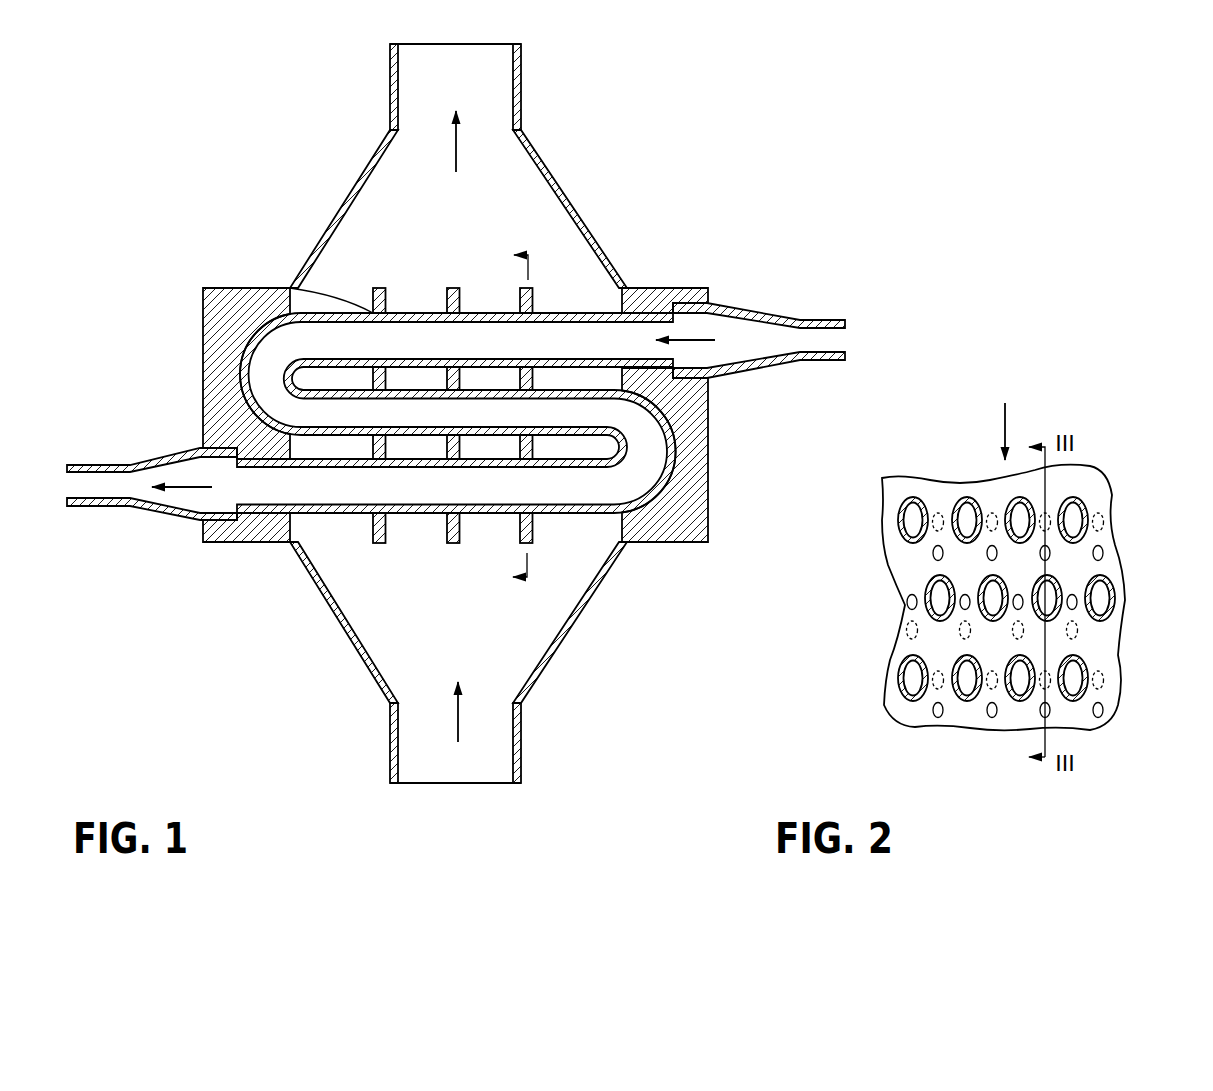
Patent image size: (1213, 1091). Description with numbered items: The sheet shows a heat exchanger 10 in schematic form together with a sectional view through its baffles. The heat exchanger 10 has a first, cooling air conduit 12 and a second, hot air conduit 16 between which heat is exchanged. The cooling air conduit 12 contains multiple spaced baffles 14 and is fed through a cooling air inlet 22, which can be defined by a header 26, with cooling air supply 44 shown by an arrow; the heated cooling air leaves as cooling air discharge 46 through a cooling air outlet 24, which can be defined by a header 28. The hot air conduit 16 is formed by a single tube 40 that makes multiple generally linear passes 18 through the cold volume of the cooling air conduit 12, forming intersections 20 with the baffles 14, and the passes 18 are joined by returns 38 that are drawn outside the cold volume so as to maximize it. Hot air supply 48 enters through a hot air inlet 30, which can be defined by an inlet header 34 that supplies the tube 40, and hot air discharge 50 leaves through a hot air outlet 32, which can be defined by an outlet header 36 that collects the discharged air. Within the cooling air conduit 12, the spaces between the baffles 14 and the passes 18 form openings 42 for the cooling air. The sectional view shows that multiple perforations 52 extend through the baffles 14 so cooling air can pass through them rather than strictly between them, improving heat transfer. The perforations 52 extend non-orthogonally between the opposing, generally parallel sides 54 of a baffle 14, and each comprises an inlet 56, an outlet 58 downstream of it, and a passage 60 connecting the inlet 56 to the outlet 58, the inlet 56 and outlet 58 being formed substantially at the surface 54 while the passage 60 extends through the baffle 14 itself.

In FIG. 1, the heat exchanger 10 is at (209, 112).
In FIG. 1, the cooling air conduit 12 is at (568, 182).
In FIG. 1, the baffle 14 is at (365, 290).
In FIG. 2, the baffle 14 is at (981, 445).
In FIG. 1, the hot air conduit 16 is at (644, 302).
In FIG. 1, the pass 18 is at (352, 446).
In FIG. 2, the pass 18 is at (1111, 563).
In FIG. 1, the intersection 20 is at (342, 390).
In FIG. 1, the cooling air inlet 22 is at (448, 772).
In FIG. 1, the cooling air outlet 24 is at (448, 75).
In FIG. 1, the header 26 is at (523, 757).
In FIG. 1, the header 28 is at (520, 92).
In FIG. 1, the hot air inlet 30 is at (803, 355).
In FIG. 1, the hot air outlet 32 is at (83, 500).
In FIG. 1, the inlet header 34 is at (767, 366).
In FIG. 1, the outlet header 36 is at (170, 455).
In FIG. 1, the return 38 is at (240, 363).
In FIG. 1, the tube 40 is at (573, 513).
In FIG. 2, the tube 40 is at (1113, 597).
In FIG. 1, the opening 42 is at (515, 378).
In FIG. 1, the cooling air supply 44 is at (455, 712).
In FIG. 2, the cooling air supply 44 is at (1007, 420).
In FIG. 1, the cooling air discharge 46 is at (453, 142).
In FIG. 1, the hot air supply 48 is at (690, 337).
In FIG. 1, the hot air discharge 50 is at (188, 488).
In FIG. 2, the perforation 52 is at (1097, 637).
In FIG. 2, the side 54 is at (907, 563).
In FIG. 2, the inlet 56 is at (908, 588).
In FIG. 2, the outlet 58 is at (908, 638).
In FIG. 2, the passage 60 is at (908, 618).